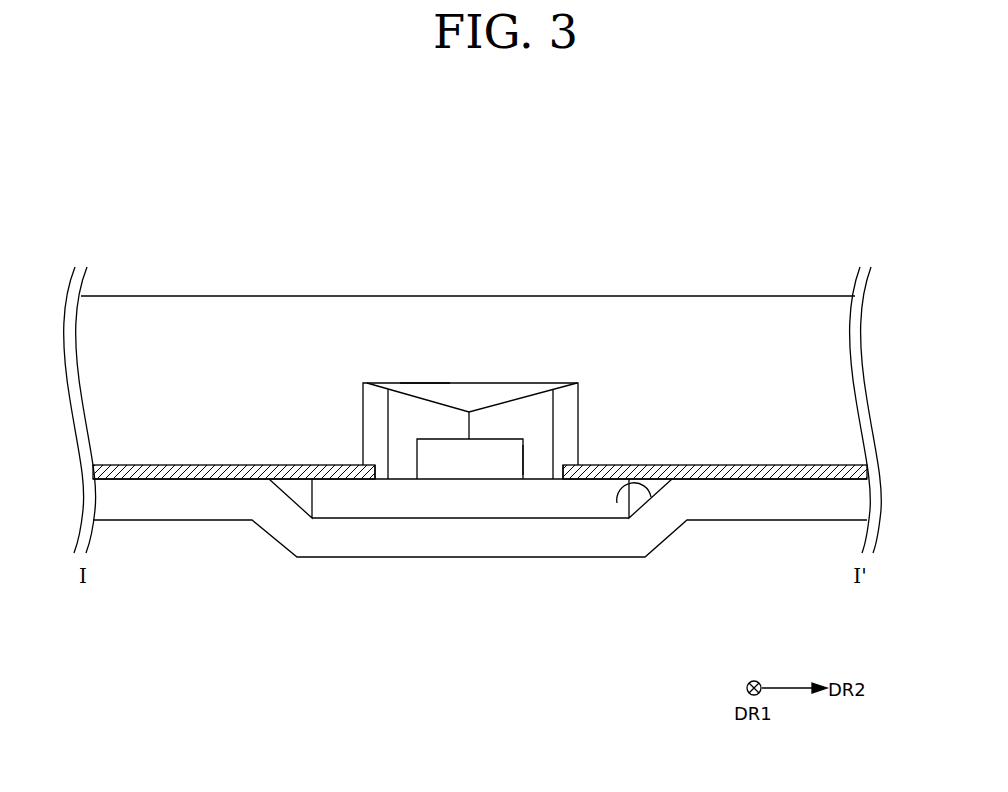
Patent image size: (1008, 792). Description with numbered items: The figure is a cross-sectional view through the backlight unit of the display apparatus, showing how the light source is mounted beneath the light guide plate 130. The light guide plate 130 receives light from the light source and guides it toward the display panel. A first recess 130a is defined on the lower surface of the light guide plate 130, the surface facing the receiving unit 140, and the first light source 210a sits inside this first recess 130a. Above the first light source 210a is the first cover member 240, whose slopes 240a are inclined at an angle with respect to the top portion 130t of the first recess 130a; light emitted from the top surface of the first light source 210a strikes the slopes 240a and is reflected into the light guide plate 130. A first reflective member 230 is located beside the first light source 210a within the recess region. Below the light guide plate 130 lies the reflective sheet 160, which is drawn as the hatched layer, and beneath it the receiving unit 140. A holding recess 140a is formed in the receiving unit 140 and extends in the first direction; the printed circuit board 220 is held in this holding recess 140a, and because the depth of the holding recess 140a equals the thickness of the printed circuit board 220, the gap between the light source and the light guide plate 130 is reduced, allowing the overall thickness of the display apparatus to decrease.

The light guide plate 130 is at (733, 315).
The first recess 130a is at (578, 402).
The top portion of the first recess 130t is at (440, 384).
The first cover member 240 is at (469, 396).
The slopes 240a is at (397, 403).
The reflective sheet 160 is at (720, 473).
The first light source 210a is at (447, 467).
The printed circuit board 220 is at (505, 503).
The first reflective member 230 is at (538, 465).
The holding recess 140a is at (617, 503).
The receiving unit 140 is at (800, 505).